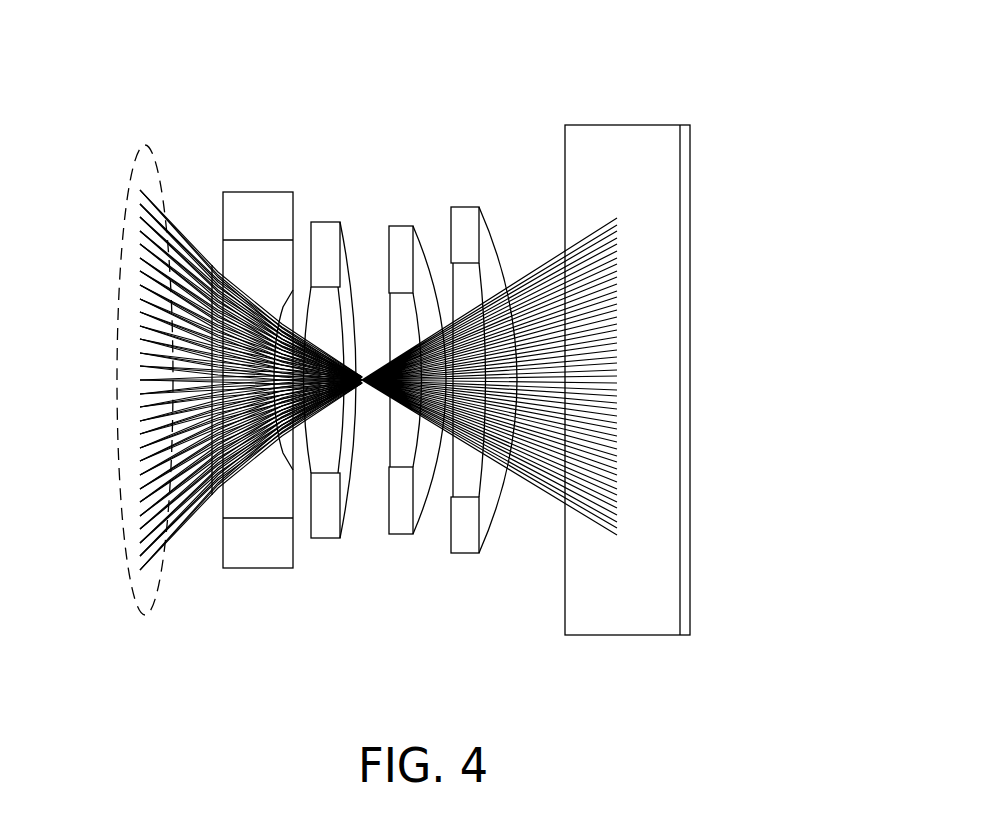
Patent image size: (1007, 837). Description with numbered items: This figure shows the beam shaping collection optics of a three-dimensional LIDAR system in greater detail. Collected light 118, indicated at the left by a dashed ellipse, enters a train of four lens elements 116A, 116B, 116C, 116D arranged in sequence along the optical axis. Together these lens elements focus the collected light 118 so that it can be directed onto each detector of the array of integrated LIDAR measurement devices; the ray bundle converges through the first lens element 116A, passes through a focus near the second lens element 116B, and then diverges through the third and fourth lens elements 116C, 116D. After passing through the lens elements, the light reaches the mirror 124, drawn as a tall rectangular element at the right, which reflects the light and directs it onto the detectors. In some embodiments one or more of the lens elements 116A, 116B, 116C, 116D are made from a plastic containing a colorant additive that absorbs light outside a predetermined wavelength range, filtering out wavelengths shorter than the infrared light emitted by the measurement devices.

The collected light 118 is at (129, 192).
The lens element 116A is at (262, 192).
The lens element 116B is at (322, 222).
The lens element 116C is at (392, 226).
The lens element 116D is at (452, 207).
The mirror 124 is at (612, 125).